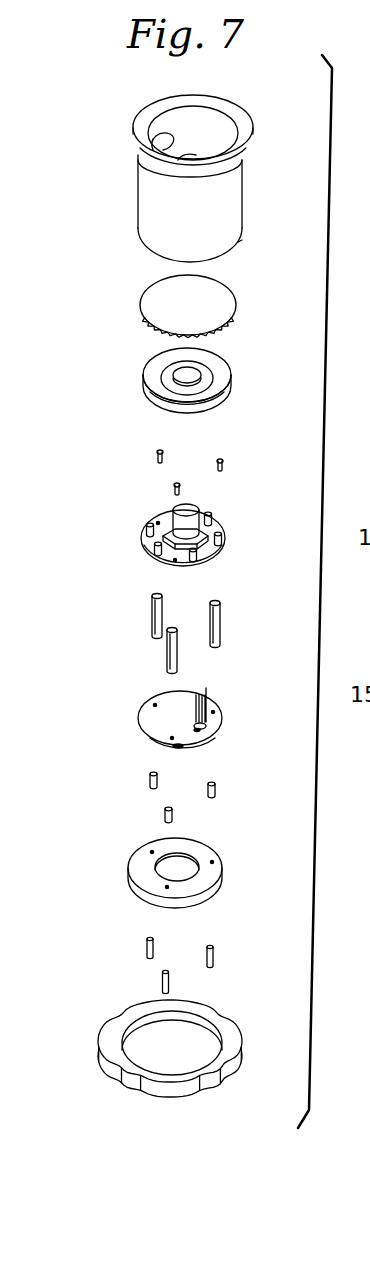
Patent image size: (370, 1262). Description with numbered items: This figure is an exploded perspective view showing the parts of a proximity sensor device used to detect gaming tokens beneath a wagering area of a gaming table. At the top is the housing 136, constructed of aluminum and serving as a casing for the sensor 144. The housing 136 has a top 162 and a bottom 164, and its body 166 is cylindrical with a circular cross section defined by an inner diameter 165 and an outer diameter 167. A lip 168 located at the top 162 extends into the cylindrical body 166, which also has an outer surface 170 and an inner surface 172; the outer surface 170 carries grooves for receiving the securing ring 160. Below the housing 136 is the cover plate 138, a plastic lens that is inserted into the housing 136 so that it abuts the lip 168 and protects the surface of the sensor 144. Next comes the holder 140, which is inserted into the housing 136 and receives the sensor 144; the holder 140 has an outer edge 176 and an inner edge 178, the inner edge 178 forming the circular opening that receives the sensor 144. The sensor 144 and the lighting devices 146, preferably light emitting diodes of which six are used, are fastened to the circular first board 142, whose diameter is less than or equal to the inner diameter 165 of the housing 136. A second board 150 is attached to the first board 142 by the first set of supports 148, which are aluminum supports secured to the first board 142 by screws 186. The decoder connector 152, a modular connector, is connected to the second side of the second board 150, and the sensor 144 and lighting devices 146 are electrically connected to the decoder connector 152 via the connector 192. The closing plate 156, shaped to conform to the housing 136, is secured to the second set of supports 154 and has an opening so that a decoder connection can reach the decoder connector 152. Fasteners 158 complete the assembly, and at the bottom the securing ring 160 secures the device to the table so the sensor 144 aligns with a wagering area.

The housing 136 is at (137, 208).
The cover plate 138 is at (142, 290).
The holder 140 is at (157, 375).
The first board 142 is at (147, 542).
The sensor 144 is at (187, 513).
The lighting device 146 is at (145, 525).
The first set of supports 148 is at (152, 608).
The second board 150 is at (148, 720).
The decoder connector 152 is at (187, 748).
The second set of supports 154 is at (165, 813).
The closing plate 156 is at (140, 860).
The fasteners 158 is at (212, 947).
The securing ring 160 is at (102, 1067).
The top 162 is at (243, 167).
The bottom 164 is at (238, 242).
The inner diameter 165 is at (138, 155).
The body 166 is at (233, 195).
The outer diameter 167 is at (145, 110).
The lip 168 is at (143, 127).
The outer surface 170 is at (158, 232).
The inner surface 172 is at (178, 158).
The outer edge 176 is at (193, 410).
The inner edge 178 is at (202, 385).
The screws 186 is at (223, 462).
The connector 192 is at (208, 702).